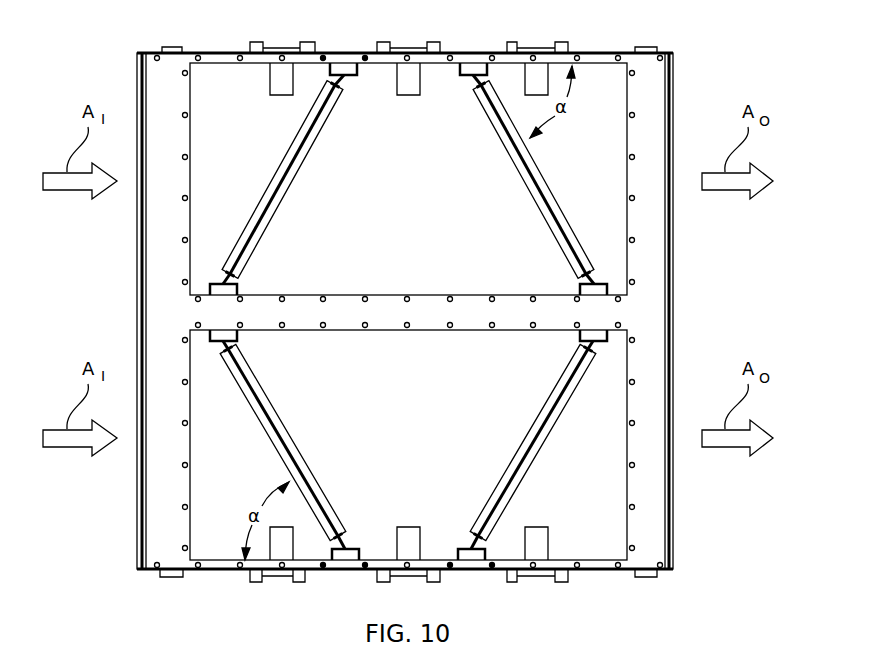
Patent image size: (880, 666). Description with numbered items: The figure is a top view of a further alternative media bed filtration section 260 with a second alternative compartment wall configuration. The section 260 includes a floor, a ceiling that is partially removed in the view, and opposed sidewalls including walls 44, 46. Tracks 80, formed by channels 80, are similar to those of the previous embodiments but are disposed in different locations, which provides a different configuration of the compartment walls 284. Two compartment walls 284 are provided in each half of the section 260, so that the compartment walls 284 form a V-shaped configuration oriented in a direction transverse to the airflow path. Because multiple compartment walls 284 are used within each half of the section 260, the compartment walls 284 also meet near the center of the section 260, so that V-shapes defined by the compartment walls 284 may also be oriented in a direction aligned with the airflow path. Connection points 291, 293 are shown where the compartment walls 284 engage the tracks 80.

The section 260 is at (693, 44).
The wall 44 is at (232, 52).
The wall 46 is at (602, 572).
The compartment wall 284 is at (270, 160).
The track 80 is at (363, 72).
The upper pivot connection 291 is at (350, 88).
The lower pivot connection 293 is at (219, 277).